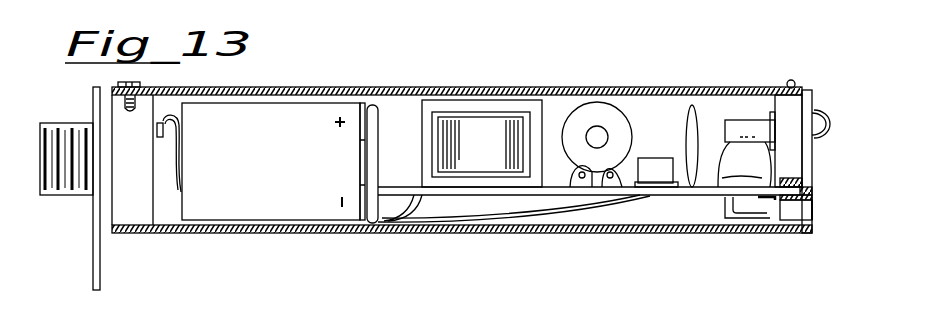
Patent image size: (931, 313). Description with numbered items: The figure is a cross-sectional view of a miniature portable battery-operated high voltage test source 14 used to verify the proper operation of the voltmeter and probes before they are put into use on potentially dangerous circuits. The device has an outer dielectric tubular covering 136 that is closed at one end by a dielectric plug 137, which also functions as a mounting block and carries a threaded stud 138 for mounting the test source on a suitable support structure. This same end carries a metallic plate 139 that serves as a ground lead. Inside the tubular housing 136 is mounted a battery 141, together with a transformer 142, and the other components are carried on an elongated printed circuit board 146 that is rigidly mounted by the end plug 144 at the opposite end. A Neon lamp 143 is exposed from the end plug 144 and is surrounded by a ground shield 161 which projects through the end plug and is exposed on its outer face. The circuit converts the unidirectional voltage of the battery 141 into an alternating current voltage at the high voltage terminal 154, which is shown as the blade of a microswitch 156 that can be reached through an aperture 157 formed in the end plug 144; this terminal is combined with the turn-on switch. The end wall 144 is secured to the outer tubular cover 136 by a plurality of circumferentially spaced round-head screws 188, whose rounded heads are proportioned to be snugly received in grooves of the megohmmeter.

The instrument assembly 14 is at (833, 164).
The outer dielectric tubular covering 136 is at (421, 74).
The dielectric plug 137 is at (133, 215).
The threaded stud 138 is at (73, 100).
The metallic plate 139 is at (93, 243).
The battery 141 is at (262, 163).
The circuit module 142 is at (495, 128).
The Neon lamp 143 is at (828, 130).
The end plug 144 is at (777, 100).
The printed circuit board 146 is at (678, 193).
The high voltage terminal 154 is at (770, 213).
The microswitch 156 is at (733, 218).
The aperture 157 is at (803, 210).
The ground shield 161 is at (818, 118).
The round-head screws 188 is at (790, 80).